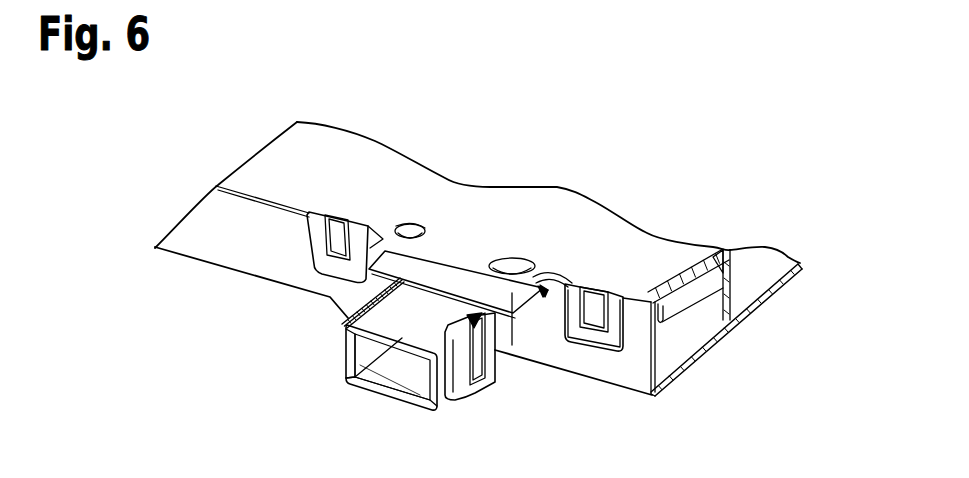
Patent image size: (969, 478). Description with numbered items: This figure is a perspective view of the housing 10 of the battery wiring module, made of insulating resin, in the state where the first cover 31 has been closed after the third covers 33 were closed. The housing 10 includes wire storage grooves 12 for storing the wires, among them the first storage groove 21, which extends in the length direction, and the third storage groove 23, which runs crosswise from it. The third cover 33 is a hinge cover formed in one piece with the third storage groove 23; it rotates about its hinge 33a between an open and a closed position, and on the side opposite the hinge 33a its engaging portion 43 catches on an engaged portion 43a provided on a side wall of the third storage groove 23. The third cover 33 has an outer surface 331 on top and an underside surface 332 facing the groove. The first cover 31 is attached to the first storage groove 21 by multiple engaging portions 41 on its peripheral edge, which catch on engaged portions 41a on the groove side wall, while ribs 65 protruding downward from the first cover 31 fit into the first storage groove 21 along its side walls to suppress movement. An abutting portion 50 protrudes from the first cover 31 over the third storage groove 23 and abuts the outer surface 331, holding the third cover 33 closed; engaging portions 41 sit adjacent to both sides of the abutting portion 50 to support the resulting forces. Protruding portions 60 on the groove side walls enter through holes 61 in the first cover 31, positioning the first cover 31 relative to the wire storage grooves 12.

The housing 10 is at (477, 248).
The wire storage grooves 12 is at (155, 251).
The first storage groove 21 is at (678, 333).
The third storage groove 23 is at (403, 373).
The first cover 31 is at (487, 215).
The third cover 33 is at (432, 372).
The hinge 33a is at (338, 337).
The outer surface 331 is at (378, 303).
The underside surface 332 is at (353, 392).
The engaging portions 41 is at (444, 299).
The engaged portions 41a is at (337, 237).
The engaging portion 43 is at (470, 384).
The engaged portion 43a is at (490, 383).
The abutting portion 50 is at (433, 280).
The protruding portions 60 is at (408, 224).
The through holes 61 is at (423, 230).
The ribs 65 is at (730, 260).